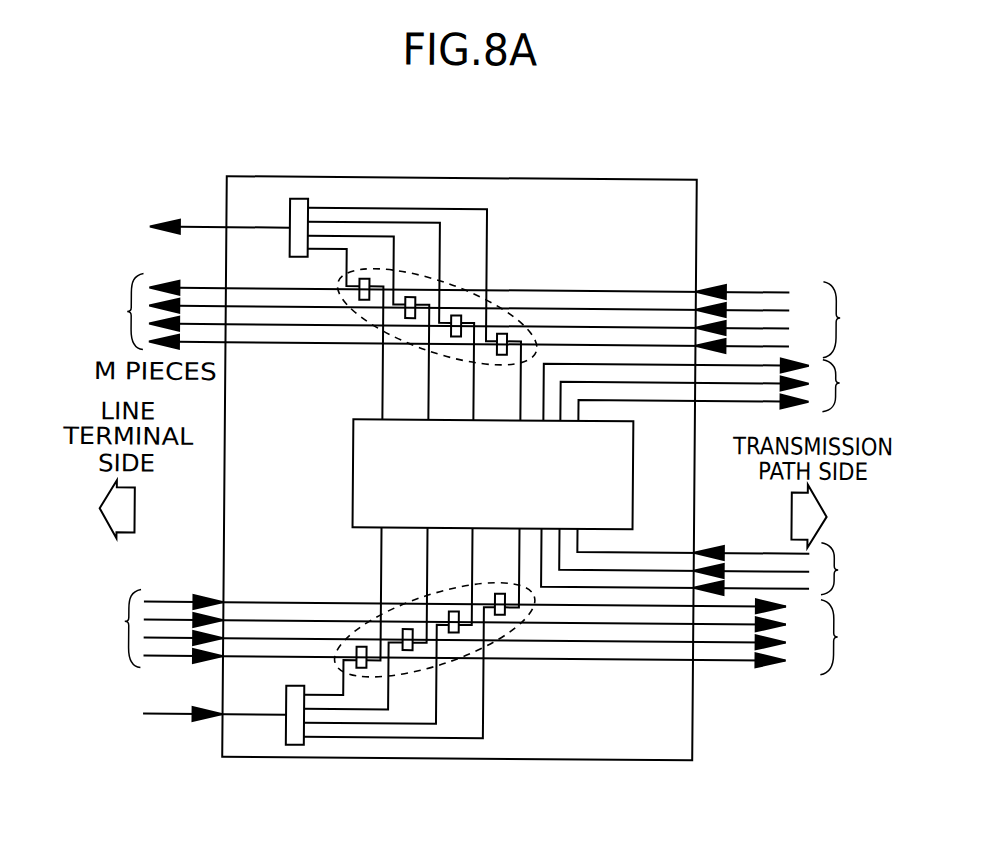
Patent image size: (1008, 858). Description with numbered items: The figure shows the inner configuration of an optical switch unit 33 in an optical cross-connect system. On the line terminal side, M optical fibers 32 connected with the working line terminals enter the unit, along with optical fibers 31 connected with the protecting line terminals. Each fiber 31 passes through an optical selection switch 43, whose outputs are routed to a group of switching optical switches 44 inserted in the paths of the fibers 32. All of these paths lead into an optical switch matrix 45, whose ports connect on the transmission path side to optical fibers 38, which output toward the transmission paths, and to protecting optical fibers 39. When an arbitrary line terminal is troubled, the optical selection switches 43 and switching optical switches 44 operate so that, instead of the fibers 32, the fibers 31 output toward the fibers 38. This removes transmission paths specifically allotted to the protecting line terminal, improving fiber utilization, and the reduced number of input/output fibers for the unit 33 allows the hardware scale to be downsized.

The optical fibers connected with the protecting line terminals 31 is at (201, 228).
The optical fibers connected with the line terminal 32 is at (126, 314).
The optical switch unit 33 is at (663, 180).
The optical fibers which output towards the transmission paths 38 is at (840, 315).
The protecting optical fibers 39 is at (840, 380).
The optical selection switches 43 is at (298, 200).
The switching optical switches 44 is at (515, 318).
The optical switch matrix 45 is at (353, 489).